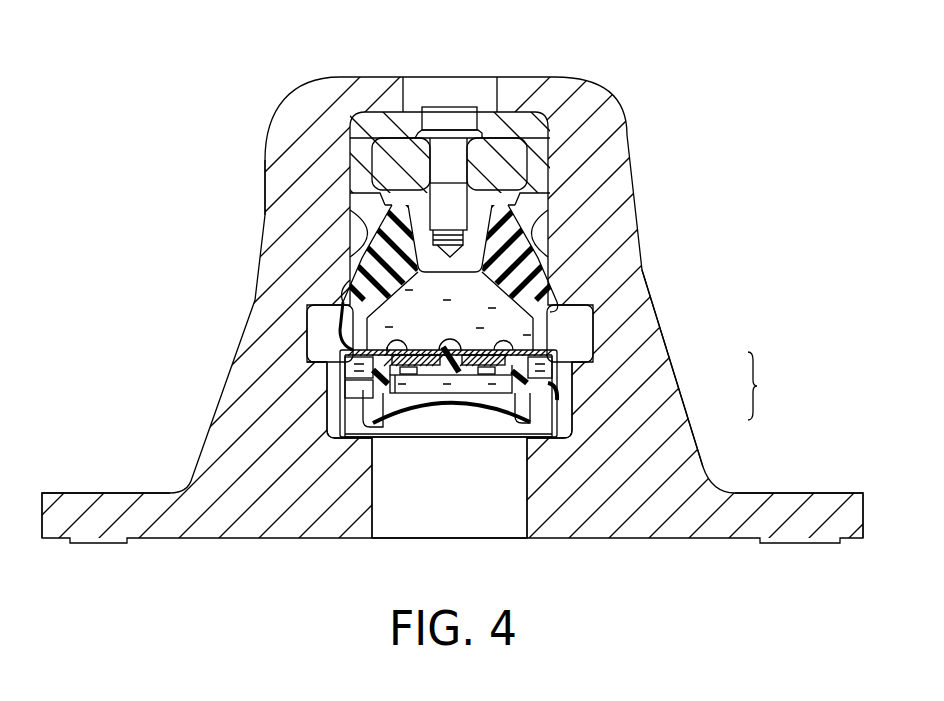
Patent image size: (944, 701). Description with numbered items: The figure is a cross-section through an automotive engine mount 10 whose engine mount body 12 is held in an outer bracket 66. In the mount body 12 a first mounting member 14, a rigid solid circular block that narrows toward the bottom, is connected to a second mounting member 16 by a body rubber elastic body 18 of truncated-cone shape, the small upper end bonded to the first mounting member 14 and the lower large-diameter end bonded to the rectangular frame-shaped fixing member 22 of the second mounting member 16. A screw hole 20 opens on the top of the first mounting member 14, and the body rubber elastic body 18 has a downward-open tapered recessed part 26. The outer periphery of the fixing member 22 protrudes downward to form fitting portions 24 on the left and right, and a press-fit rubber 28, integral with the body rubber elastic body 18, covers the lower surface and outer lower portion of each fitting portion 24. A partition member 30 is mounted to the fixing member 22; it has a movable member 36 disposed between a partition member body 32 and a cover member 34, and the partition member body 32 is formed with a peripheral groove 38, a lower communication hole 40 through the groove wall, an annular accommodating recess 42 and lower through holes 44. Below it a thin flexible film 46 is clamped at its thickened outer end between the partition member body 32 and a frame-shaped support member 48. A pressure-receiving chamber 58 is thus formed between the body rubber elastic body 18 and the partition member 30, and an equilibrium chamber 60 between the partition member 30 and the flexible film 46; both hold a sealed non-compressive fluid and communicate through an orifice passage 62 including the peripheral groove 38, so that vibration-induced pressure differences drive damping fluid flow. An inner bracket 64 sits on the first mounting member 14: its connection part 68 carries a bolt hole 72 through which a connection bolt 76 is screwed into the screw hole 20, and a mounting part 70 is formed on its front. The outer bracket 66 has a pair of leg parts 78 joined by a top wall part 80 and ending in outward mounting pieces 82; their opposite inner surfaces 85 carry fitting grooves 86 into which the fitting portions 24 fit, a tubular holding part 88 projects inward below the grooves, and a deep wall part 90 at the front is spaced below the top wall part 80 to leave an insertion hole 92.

The engine mount 10 is at (632, 70).
The engine mount body 12 is at (519, 218).
The first mounting member 14 is at (488, 214).
The second mounting member 16 is at (765, 386).
The body rubber elastic body 18 is at (520, 267).
The screw hole 20 is at (466, 216).
The fixing member 22 is at (589, 340).
The fitting portion 24 is at (362, 363).
The recessed part 26 is at (540, 300).
The press-fit rubber 28 is at (316, 351).
The partition member 30 is at (465, 383).
The partition member body 32 is at (518, 373).
The cover member 34 is at (387, 347).
The movable member 36 is at (428, 362).
The peripheral groove 38 is at (533, 357).
The lower communication hole 40 is at (364, 390).
The accommodating recess 42 is at (437, 366).
The lower through hole 44 is at (420, 373).
The flexible film 46 is at (497, 395).
The support member 48 is at (561, 409).
The pressure-receiving chamber 58 is at (461, 320).
The equilibrium chamber 60 is at (516, 410).
The orifice passage 62 is at (348, 401).
The inner bracket 64 is at (513, 133).
The outer bracket 66 is at (287, 107).
The connection part 68 is at (400, 155).
The mounting part 70 is at (362, 170).
The bolt hole 72 is at (440, 127).
The connection bolt 76 is at (471, 117).
The leg part 78 is at (297, 248).
The top wall part 80 is at (388, 93).
The mounting piece 82 is at (97, 520).
The opposite inner surface 85 is at (336, 440).
The fitting groove 86 is at (322, 320).
The holding part 88 is at (388, 497).
The deep wall part 90 is at (345, 272).
The insertion hole 92 is at (375, 240).